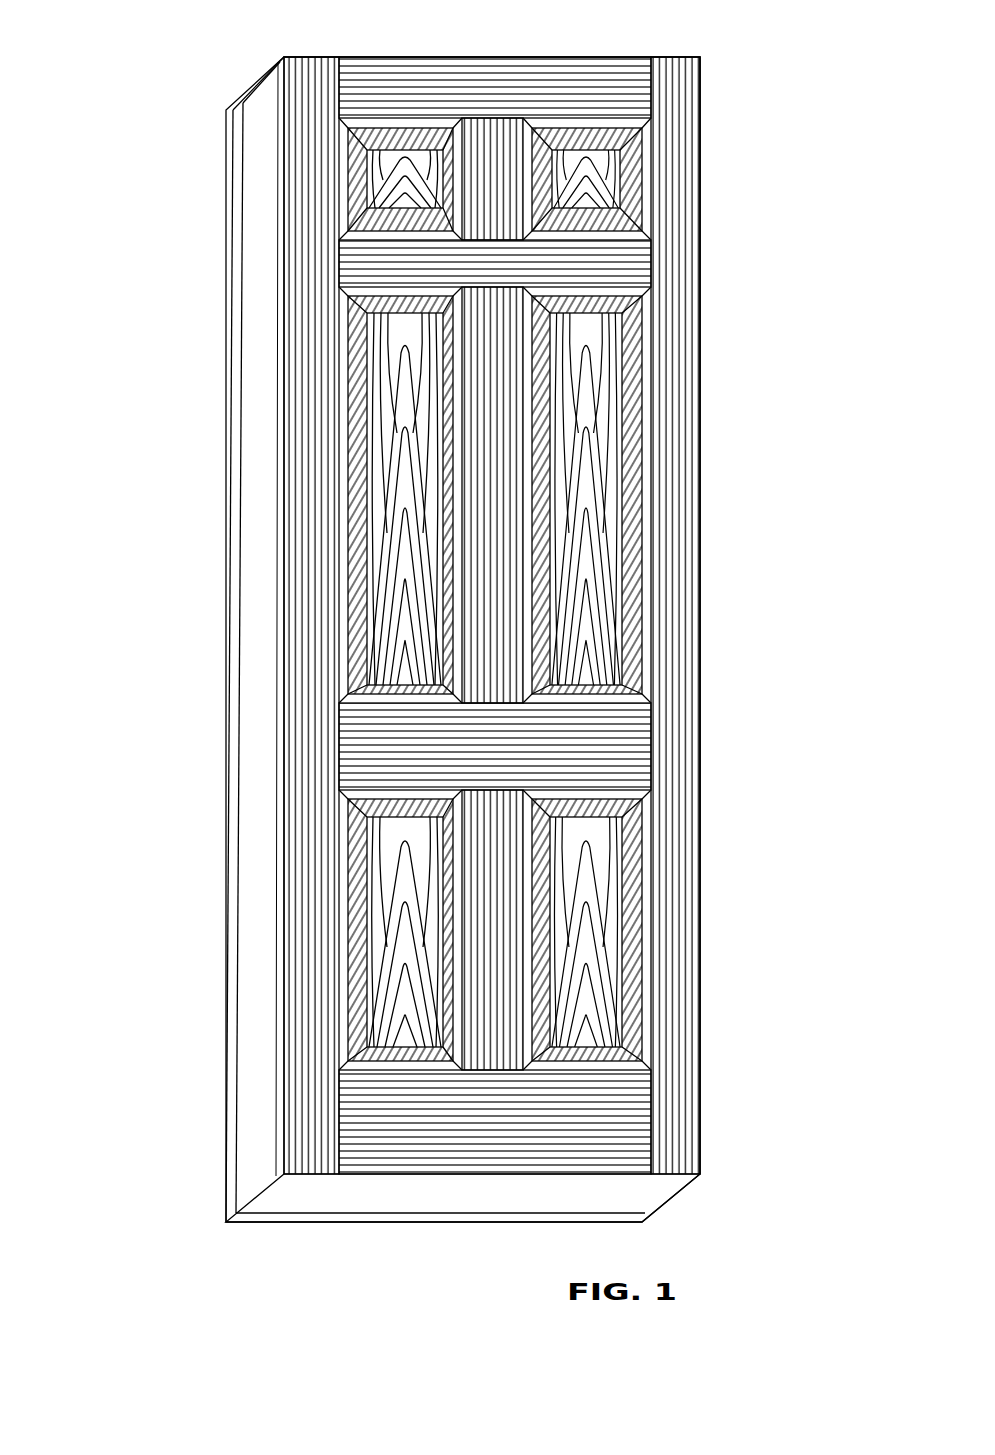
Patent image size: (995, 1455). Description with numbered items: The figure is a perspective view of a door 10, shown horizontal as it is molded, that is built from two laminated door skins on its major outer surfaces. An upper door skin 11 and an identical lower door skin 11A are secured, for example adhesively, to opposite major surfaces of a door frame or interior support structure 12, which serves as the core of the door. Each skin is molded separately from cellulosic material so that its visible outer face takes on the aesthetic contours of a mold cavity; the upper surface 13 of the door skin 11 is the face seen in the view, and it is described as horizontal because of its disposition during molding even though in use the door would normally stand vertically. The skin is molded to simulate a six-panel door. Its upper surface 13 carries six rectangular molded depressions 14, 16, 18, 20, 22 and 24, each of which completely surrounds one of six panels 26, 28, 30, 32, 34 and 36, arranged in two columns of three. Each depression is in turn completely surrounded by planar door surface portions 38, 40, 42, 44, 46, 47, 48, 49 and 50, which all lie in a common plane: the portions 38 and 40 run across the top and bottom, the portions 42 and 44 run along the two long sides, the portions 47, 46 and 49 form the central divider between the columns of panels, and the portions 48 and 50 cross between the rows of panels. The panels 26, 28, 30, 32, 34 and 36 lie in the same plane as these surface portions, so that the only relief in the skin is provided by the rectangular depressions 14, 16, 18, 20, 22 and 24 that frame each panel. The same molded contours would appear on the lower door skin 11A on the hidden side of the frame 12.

The door 10 is at (237, 80).
The upper door skin 11 is at (283, 530).
The lower door skin 11A is at (235, 646).
The door frame or interior support structure 12 is at (255, 713).
The upper surface of the door skin 13 is at (670, 215).
The molded depression 14 is at (400, 135).
The molded depression 16 is at (628, 157).
The molded depression 18 is at (360, 348).
The molded depression 20 is at (612, 308).
The molded depression 22 is at (355, 888).
The molded depression 24 is at (635, 857).
The door panel 26 is at (400, 174).
The door panel 28 is at (588, 188).
The door panel 30 is at (400, 425).
The door panel 32 is at (588, 455).
The door panel 34 is at (380, 930).
The door panel 36 is at (588, 932).
The planar door surface portion 38 is at (550, 72).
The planar door surface portion 40 is at (415, 1128).
The planar door surface portion 42 is at (318, 596).
The planar door surface portion 44 is at (685, 535).
The planar door surface portion 46 is at (505, 372).
The planar door surface portion 47 is at (505, 148).
The planar door surface portion 48 is at (612, 262).
The planar door surface portion 49 is at (505, 1001).
The planar door surface portion 50 is at (635, 741).